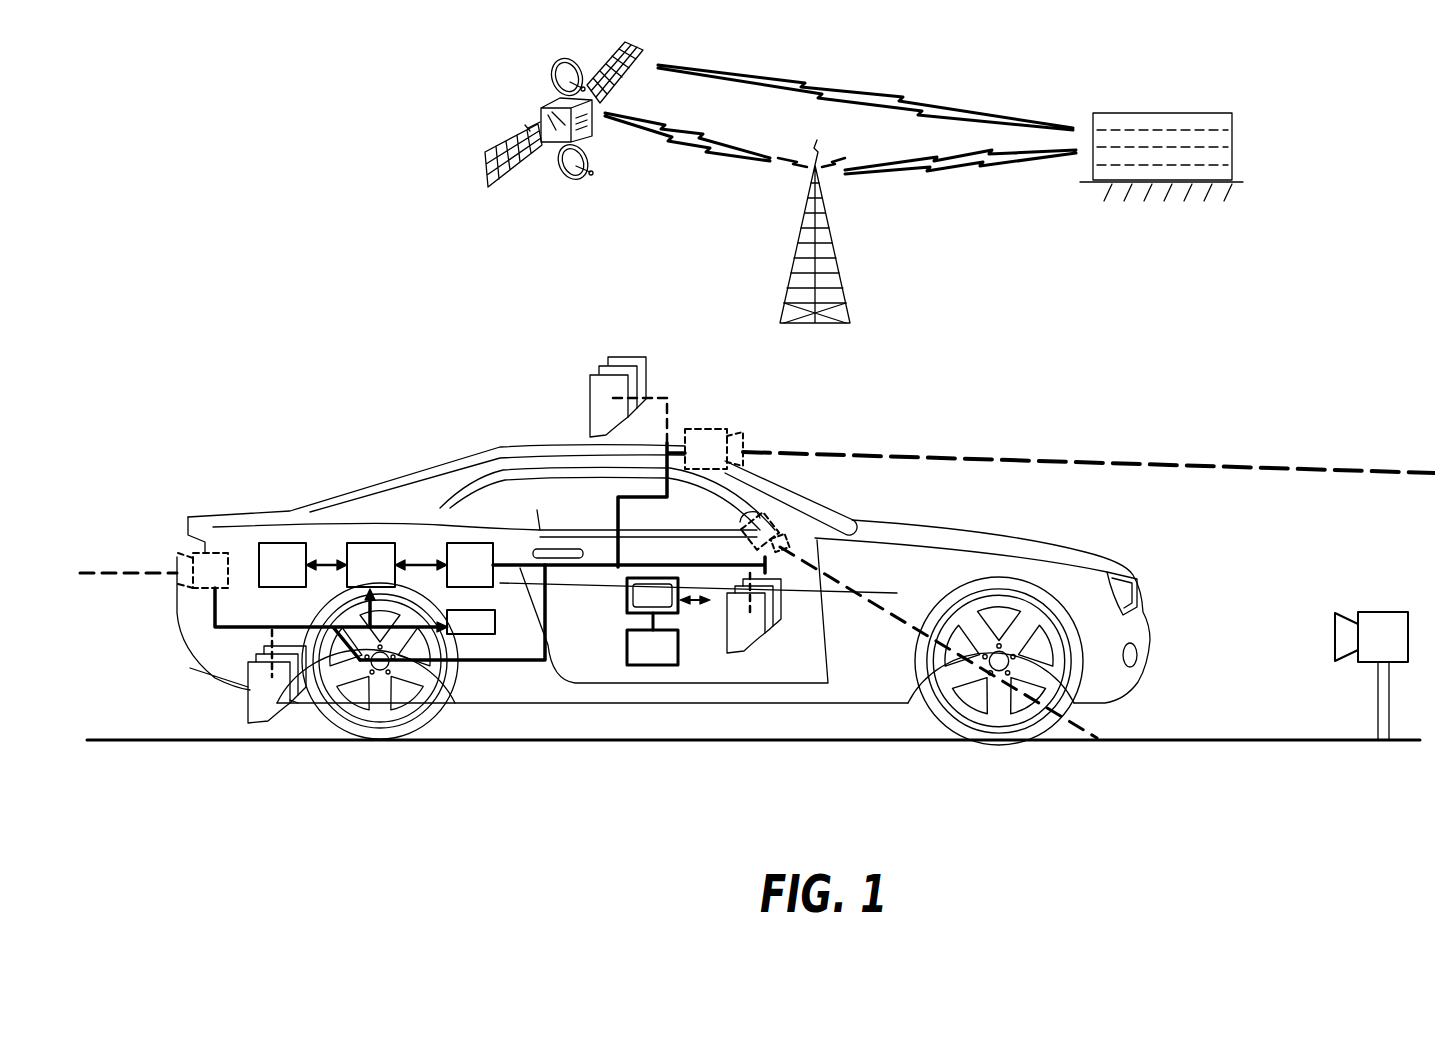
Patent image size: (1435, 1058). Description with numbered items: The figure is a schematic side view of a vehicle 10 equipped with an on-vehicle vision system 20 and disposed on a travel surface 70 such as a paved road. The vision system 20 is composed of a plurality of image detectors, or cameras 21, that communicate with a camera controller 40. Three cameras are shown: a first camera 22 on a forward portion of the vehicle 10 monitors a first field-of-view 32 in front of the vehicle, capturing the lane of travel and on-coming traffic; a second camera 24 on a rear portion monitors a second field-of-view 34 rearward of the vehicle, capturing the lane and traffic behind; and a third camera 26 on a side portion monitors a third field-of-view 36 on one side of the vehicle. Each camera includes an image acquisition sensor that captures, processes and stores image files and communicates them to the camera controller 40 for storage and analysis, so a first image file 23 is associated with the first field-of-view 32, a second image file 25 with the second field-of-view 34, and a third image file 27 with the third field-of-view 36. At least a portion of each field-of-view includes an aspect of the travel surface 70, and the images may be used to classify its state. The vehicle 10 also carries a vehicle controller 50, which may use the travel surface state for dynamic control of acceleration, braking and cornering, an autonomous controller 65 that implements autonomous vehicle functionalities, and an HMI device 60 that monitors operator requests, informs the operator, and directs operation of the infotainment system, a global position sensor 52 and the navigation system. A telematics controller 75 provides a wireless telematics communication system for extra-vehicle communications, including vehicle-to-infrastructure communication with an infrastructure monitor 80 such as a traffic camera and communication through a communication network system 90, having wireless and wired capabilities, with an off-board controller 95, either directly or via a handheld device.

The vehicle 10 is at (1036, 524).
The on-vehicle vision system 20 is at (616, 506).
The image detectors (cameras) 21 is at (723, 424).
The first camera 22 is at (705, 428).
The first image file 23 is at (590, 397).
The second camera 24 is at (225, 650).
The second image file 25 is at (273, 717).
The third camera 26 is at (773, 513).
The third image file 27 is at (747, 653).
The first field-of-view 32 is at (863, 453).
The second field-of-view 34 is at (137, 573).
The third field-of-view 36 is at (873, 612).
The camera controller 40 is at (472, 543).
The vehicle controller 50 is at (370, 543).
The global position sensor (GPS) 52 is at (627, 642).
The HMI device 60 is at (627, 603).
The autonomous controller 65 is at (478, 650).
The travel surface 70 is at (1220, 738).
The telematics controller 75 is at (283, 543).
The infrastructure monitor 80 is at (1397, 654).
The communication network system 90 is at (678, 212).
The off-board controller 95 is at (1232, 137).